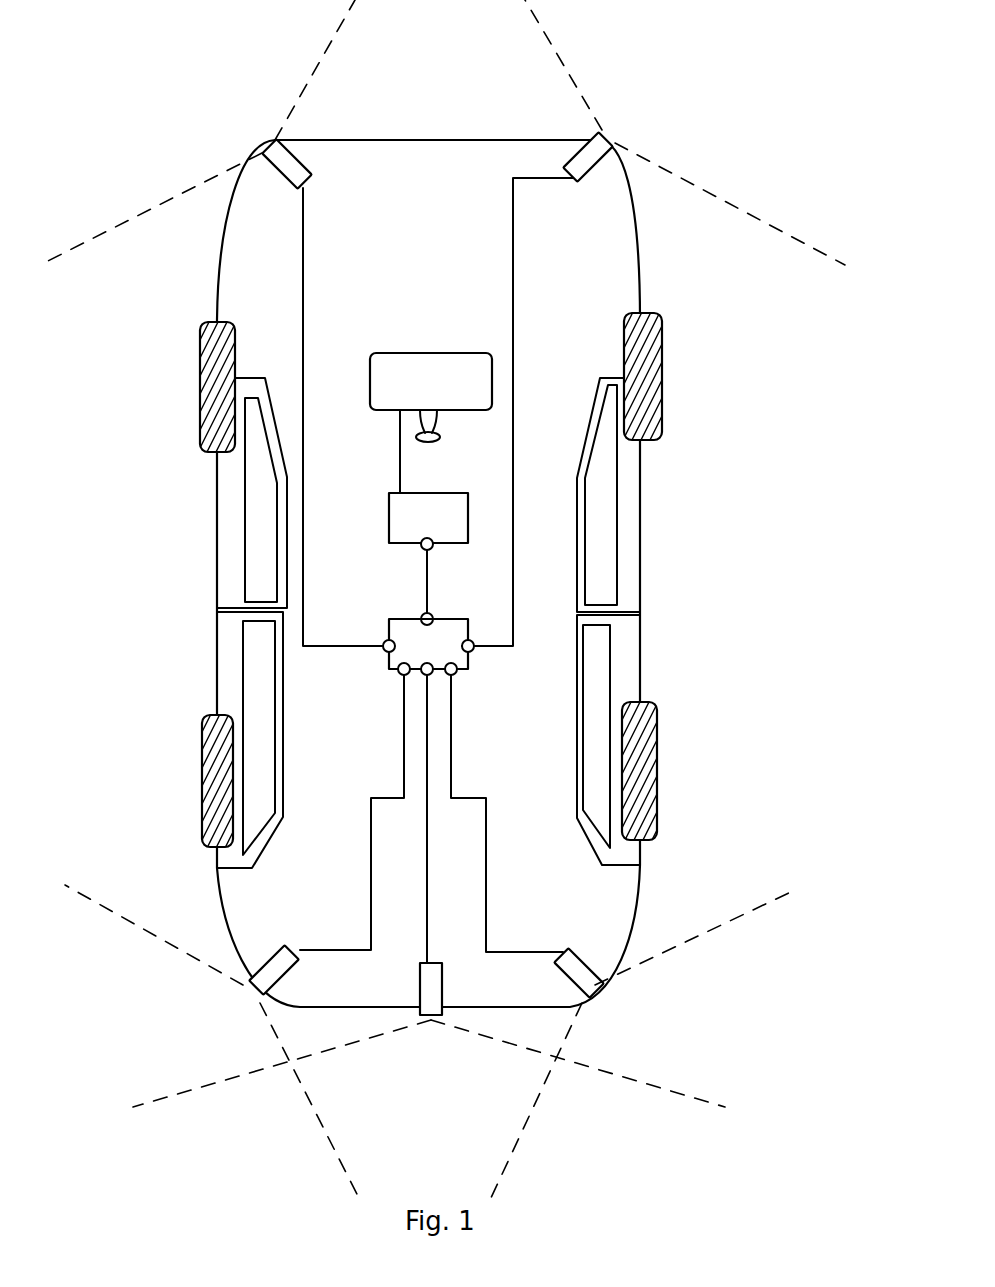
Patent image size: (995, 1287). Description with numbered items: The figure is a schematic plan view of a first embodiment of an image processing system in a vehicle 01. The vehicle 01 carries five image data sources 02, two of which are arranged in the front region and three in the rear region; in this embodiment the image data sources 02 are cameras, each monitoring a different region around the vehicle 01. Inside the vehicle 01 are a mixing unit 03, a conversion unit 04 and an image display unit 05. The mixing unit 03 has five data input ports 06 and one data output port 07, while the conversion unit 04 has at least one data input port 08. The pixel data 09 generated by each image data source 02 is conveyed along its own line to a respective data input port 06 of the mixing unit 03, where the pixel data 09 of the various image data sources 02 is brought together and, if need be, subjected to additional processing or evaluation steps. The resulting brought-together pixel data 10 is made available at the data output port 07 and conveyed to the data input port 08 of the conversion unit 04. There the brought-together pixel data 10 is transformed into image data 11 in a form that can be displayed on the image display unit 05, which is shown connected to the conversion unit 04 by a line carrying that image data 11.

The vehicle 01 is at (752, 1031).
The image data sources 02 is at (308, 178).
The mixing unit 03 is at (408, 616).
The conversion unit 04 is at (458, 493).
The image display unit 05 is at (470, 353).
The data input ports 06 is at (427, 676).
The data output port 07 is at (433, 618).
The data input port 08 is at (433, 548).
The pixel data 09 is at (303, 265).
The brought-together pixel data 10 is at (427, 582).
The image data 11 is at (400, 450).